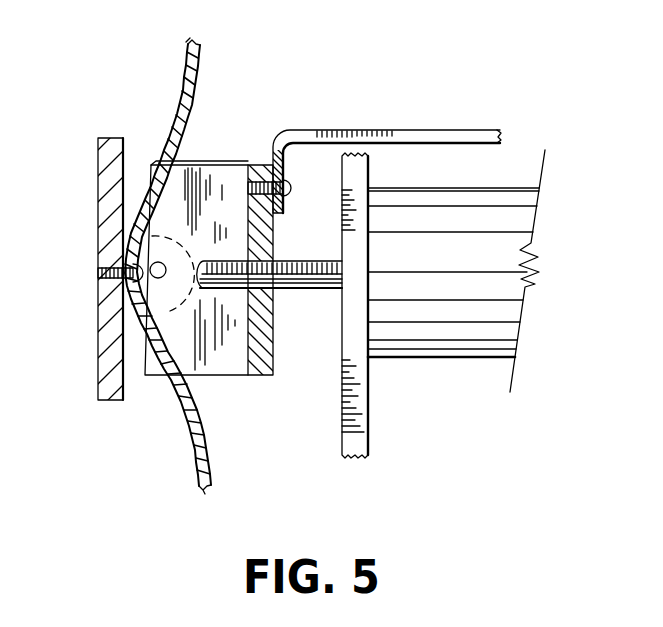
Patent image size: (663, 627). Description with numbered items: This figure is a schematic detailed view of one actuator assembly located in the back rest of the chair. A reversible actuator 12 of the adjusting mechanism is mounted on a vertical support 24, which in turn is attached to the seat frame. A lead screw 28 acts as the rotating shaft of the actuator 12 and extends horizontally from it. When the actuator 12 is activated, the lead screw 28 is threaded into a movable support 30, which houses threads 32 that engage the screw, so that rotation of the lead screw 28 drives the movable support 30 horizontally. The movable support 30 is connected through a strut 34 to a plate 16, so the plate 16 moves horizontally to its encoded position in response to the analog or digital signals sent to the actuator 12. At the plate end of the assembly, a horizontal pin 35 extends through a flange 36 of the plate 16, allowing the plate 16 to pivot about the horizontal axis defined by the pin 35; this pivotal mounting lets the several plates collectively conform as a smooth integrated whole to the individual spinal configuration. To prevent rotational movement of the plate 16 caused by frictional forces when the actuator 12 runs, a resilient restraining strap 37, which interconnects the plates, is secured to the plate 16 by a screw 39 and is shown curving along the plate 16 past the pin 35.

The actuator 12 is at (489, 271).
The plate 16 is at (79, 280).
The vertical support 24 is at (374, 154).
The lead screw 28 is at (332, 305).
The movable support 30 is at (263, 306).
The threads 32 is at (269, 248).
The strut 34 is at (209, 239).
The horizontal pin 35 is at (172, 303).
The flange 36 is at (173, 257).
The restraining strap 37 is at (164, 266).
The screw 39 is at (88, 298).